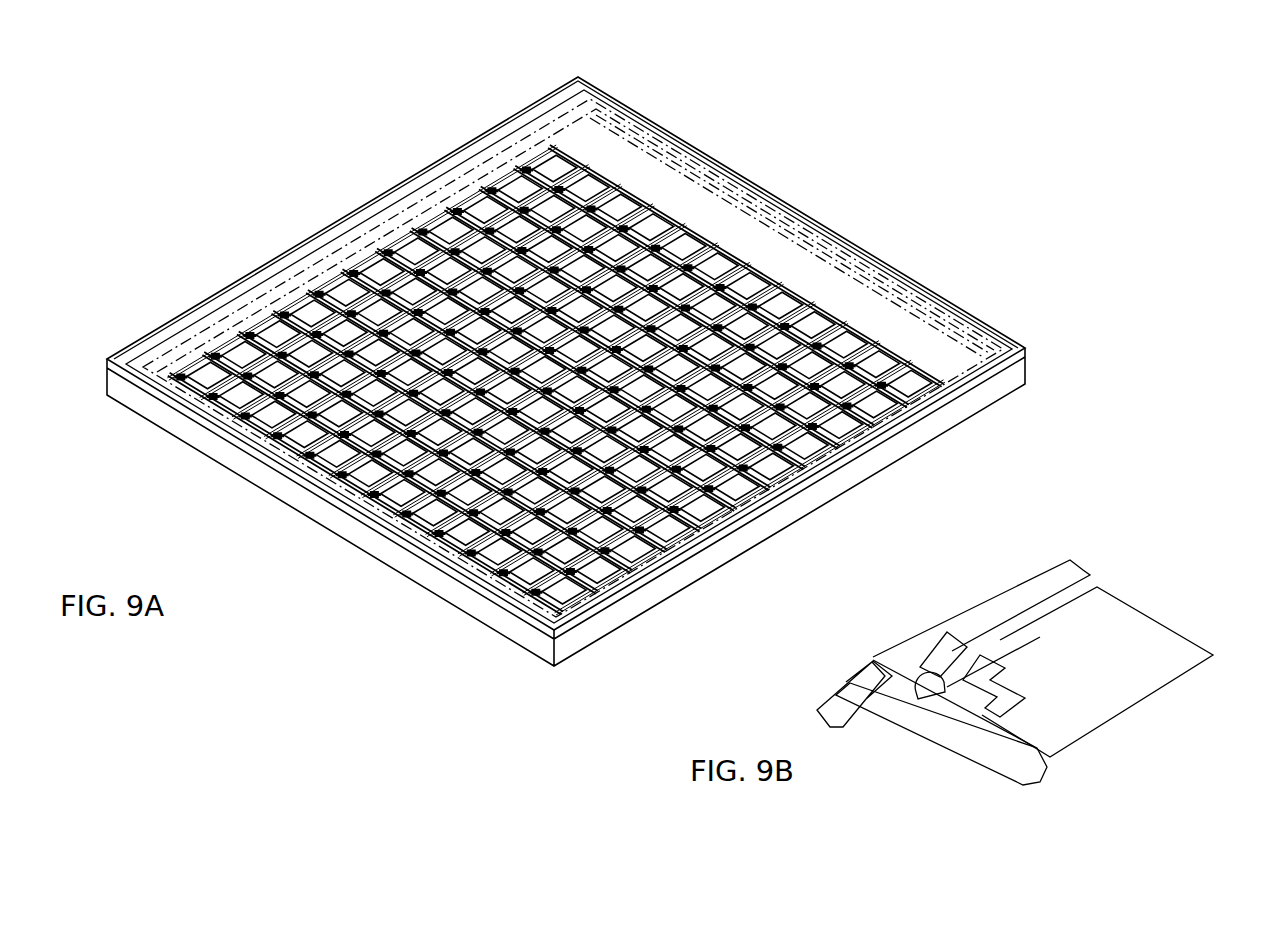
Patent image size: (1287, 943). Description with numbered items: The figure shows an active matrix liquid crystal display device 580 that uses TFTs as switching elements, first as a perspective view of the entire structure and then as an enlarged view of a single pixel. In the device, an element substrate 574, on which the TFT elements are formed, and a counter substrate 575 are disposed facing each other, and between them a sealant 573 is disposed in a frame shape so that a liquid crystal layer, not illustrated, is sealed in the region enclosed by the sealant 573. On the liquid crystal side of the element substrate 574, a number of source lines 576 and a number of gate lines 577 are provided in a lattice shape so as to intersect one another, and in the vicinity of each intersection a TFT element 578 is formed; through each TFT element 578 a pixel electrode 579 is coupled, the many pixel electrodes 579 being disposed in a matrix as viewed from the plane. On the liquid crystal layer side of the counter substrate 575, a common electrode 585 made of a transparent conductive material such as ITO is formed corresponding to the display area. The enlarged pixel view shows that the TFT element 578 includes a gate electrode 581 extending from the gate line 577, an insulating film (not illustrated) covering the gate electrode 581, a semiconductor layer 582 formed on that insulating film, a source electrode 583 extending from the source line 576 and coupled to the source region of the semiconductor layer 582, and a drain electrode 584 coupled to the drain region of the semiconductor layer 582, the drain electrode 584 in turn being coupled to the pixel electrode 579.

In FIG. 9A, the liquid crystal display device 580 is at (698, 115).
In FIG. 9A, the common electrode 585 is at (508, 148).
In FIG. 9A, the gate line 577 is at (402, 252).
In FIG. 9B, the gate line 577 is at (1045, 587).
In FIG. 9A, the pixel electrode 579 is at (345, 262).
In FIG. 9B, the pixel electrode 579 is at (1133, 617).
In FIG. 9A, the TFT element 578 is at (352, 273).
In FIG. 9B, the TFT element 578 is at (1055, 640).
In FIG. 9A, the source line 576 is at (738, 247).
In FIG. 9B, the source line 576 is at (980, 740).
In FIG. 9A, the sealant 573 is at (880, 257).
In FIG. 9A, the counter substrate 575 is at (150, 350).
In FIG. 9A, the element substrate 574 is at (228, 460).
In FIG. 9B, the gate electrode 581 is at (947, 654).
In FIG. 9B, the semiconductor layer 582 is at (950, 663).
In FIG. 9B, the source electrode 583 is at (910, 655).
In FIG. 9B, the drain electrode 584 is at (993, 667).